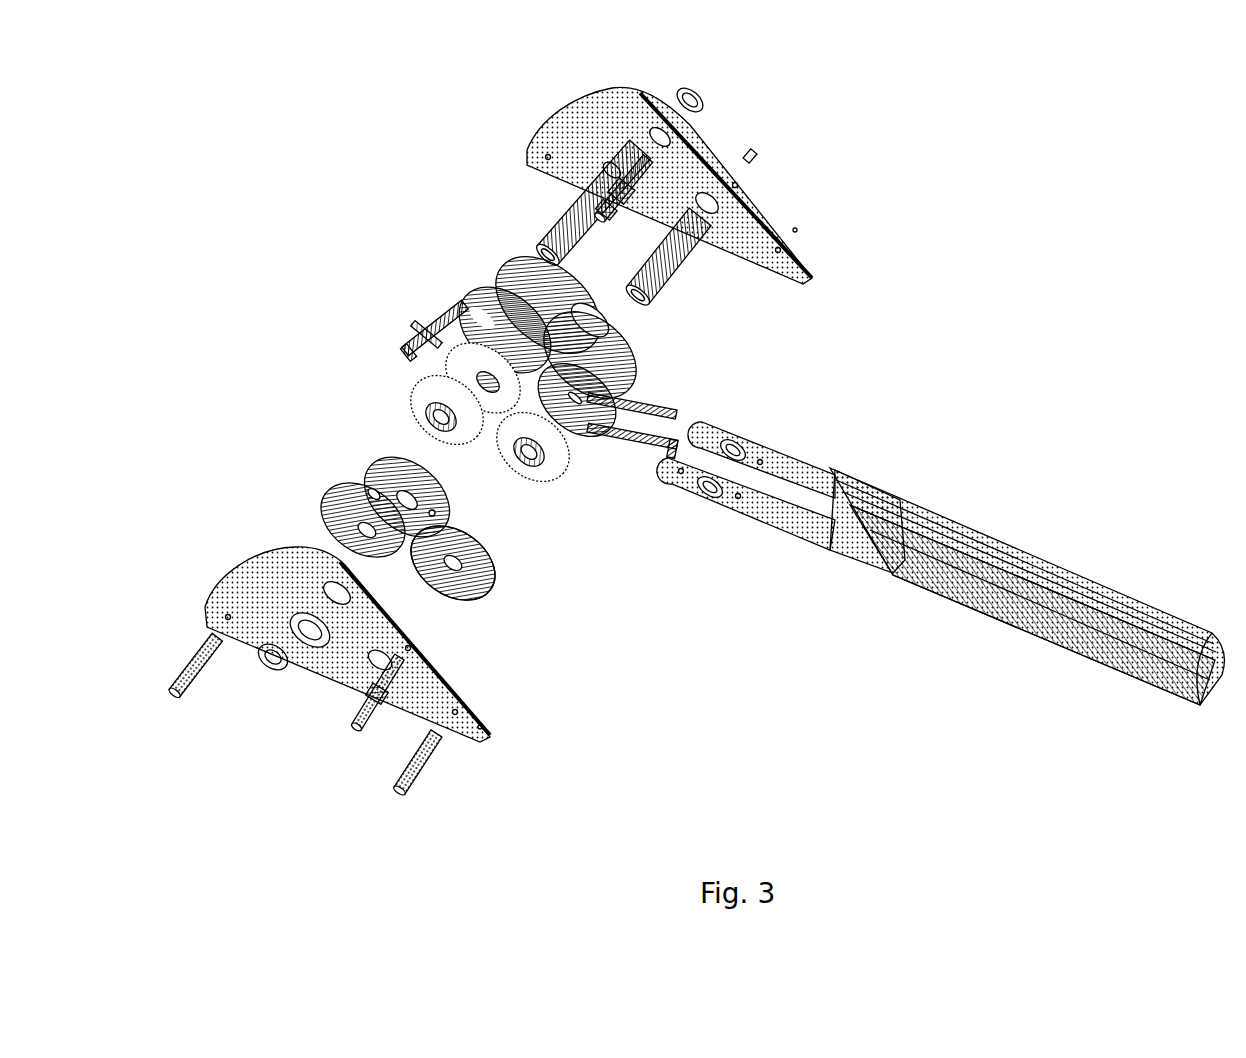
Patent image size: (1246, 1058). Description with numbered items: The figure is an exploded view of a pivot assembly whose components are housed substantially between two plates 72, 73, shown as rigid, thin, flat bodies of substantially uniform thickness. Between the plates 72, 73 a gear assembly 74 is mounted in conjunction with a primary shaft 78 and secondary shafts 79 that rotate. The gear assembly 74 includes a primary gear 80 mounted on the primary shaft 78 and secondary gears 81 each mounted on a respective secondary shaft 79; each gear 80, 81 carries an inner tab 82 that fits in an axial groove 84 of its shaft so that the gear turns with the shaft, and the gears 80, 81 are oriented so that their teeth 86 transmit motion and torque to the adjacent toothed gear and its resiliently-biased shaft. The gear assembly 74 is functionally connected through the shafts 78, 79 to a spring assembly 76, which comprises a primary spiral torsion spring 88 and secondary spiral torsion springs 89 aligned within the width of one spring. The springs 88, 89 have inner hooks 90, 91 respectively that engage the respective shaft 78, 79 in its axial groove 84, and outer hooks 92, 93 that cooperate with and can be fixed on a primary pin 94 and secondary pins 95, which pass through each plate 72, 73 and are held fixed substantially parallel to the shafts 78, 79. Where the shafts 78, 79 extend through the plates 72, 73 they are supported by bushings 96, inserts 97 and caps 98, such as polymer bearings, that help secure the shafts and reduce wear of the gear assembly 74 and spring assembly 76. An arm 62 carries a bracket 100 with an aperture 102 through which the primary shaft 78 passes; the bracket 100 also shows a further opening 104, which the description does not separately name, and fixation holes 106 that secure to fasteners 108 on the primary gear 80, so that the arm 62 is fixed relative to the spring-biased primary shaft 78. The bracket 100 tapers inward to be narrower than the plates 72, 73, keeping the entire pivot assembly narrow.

The arm 62 is at (1070, 593).
The plate 72 is at (450, 683).
The plate 73 is at (757, 220).
The gear assembly 74 is at (490, 597).
The spring assembly 76 is at (447, 308).
The primary shaft 78 is at (627, 157).
The secondary shaft 79 is at (570, 222).
The primary gear 80 is at (387, 467).
The secondary gear 81 is at (340, 500).
The tab 82 is at (410, 497).
The axial groove 84 is at (653, 163).
The teeth 86 is at (495, 583).
The primary spiral torsion spring 88 is at (507, 280).
The secondary spiral torsion spring 89 is at (588, 433).
The inner hook 90 is at (503, 300).
The inner hook 91 is at (555, 460).
The outer hook 92 is at (630, 347).
The outer hook 93 is at (402, 347).
The primary pin 94 is at (353, 730).
The secondary pin 95 is at (190, 685).
The bushing 96 is at (548, 255).
The insert 97 is at (418, 398).
The cap 98 is at (697, 92).
The bracket 100 is at (813, 473).
The aperture 102 is at (745, 447).
The lower arm aperture 104 is at (682, 475).
The fixation hole 106 is at (738, 500).
The fastener 108 is at (372, 492).